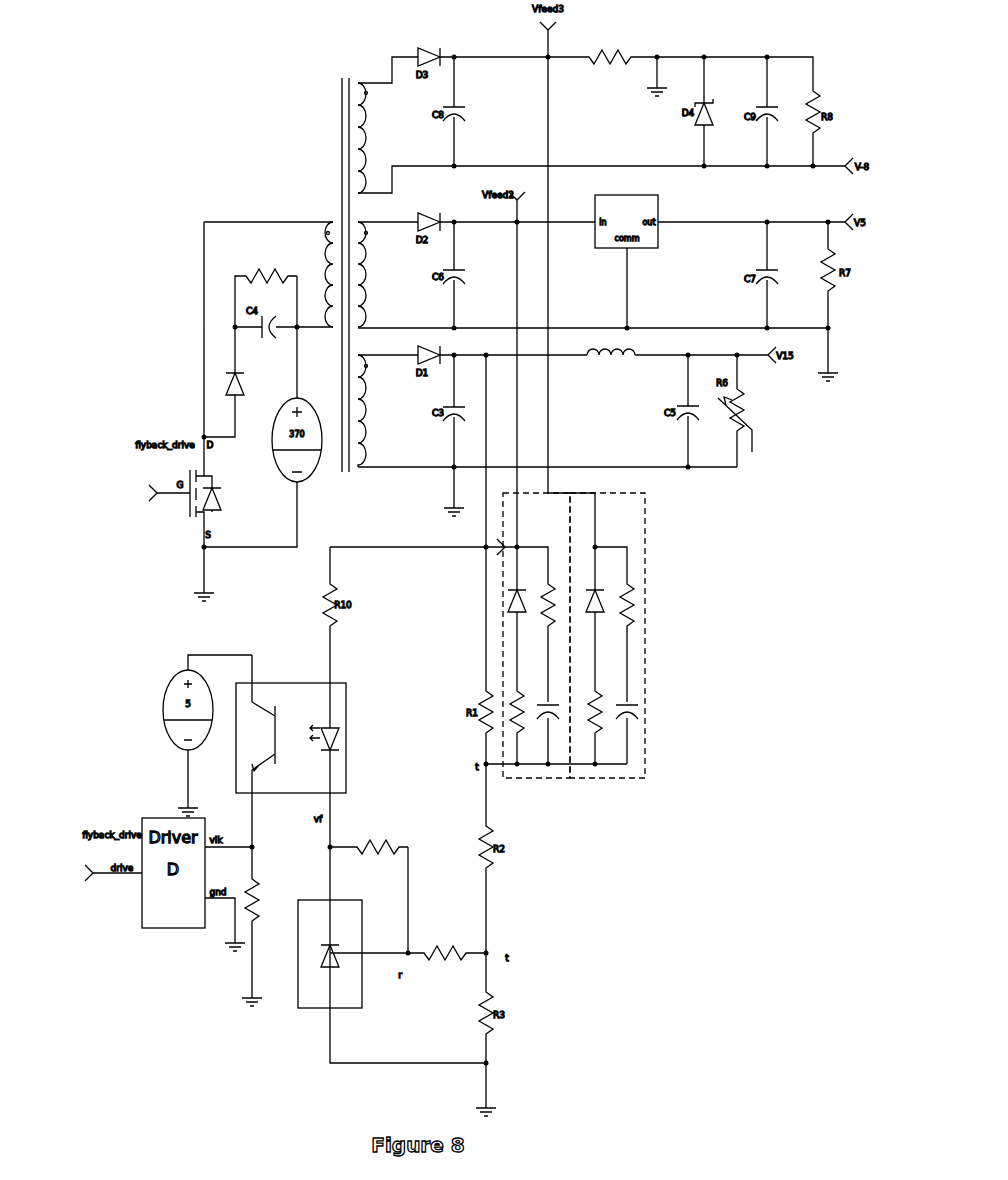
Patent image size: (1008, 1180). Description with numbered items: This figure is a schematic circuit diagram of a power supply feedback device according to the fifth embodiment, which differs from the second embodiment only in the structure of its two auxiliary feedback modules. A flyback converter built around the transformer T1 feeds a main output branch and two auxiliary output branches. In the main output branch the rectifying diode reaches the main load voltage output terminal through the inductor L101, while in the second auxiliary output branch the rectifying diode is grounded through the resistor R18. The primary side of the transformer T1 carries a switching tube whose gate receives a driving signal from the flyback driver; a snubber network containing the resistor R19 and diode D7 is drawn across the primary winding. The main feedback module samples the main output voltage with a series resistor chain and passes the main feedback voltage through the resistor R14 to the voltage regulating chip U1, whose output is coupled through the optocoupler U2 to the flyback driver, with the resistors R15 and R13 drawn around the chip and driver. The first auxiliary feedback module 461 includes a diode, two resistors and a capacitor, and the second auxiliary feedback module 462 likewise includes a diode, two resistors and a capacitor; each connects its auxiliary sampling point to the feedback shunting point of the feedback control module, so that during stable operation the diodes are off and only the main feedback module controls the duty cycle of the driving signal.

The first auxiliary feedback module 461 is at (530, 635).
The second auxiliary feedback module 462 is at (613, 635).
The flyback transformer T1 is at (343, 272).
The voltage regulating chip U1 is at (320, 954).
The optocoupler U2 is at (300, 738).
The inductor L101 is at (611, 361).
The resistor R18 is at (610, 48).
The resistor R19 is at (266, 288).
The diode D7 is at (232, 382).
The resistor R13 is at (260, 900).
The resistor R14 is at (445, 945).
The resistor R15 is at (378, 838).